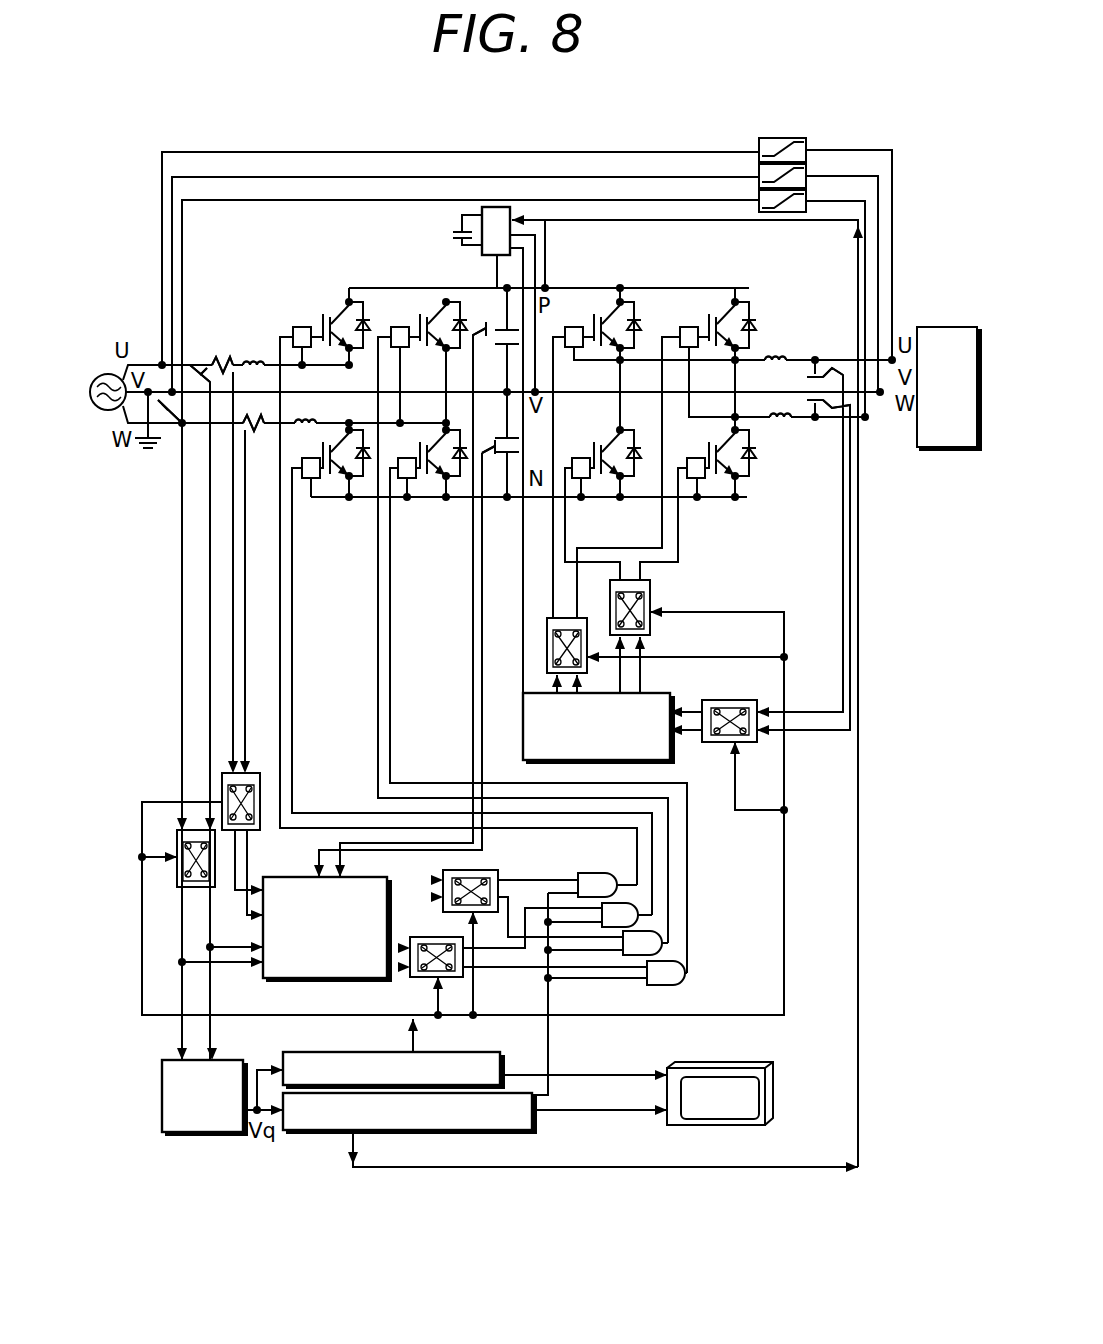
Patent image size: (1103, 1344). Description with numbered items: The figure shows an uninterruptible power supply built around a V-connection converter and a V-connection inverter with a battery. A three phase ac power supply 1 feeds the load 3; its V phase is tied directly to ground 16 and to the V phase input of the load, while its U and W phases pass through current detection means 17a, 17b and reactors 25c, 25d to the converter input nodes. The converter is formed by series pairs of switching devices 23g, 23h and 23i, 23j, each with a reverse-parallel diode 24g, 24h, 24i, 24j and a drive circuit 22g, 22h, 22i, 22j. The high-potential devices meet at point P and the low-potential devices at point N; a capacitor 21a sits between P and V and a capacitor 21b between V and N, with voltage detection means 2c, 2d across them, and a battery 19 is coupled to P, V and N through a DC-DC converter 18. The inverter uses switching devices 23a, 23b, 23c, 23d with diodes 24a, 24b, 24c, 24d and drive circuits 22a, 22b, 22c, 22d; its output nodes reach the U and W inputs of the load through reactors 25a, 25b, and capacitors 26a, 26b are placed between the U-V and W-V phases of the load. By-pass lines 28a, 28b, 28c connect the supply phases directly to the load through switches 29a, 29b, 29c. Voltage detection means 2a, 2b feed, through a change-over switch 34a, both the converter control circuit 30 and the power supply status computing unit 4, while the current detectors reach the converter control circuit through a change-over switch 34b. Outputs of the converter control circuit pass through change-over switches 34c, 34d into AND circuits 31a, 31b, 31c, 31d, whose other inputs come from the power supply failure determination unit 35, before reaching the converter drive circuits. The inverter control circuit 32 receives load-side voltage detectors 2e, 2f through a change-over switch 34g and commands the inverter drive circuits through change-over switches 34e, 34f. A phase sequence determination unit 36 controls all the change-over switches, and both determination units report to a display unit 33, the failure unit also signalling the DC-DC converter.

The three phase ac power supply 1 is at (103, 410).
The voltage detection means 2a is at (196, 369).
The voltage detection means 2b is at (170, 420).
The voltage detection means 2c is at (480, 340).
The voltage detection means 2d is at (490, 456).
The voltage detector 2e is at (828, 366).
The voltage detector 2f is at (846, 425).
The load 3 is at (930, 327).
The power supply status computing unit 4 is at (206, 1134).
The ground 16 is at (148, 450).
The current detection means 17a is at (221, 358).
The current detection means 17b is at (254, 432).
The DC-DC converter 18 is at (488, 207).
The battery 19 is at (460, 230).
The capacitor 21a is at (506, 326).
The capacitor 21b is at (510, 456).
The drive circuit 22a is at (574, 327).
The drive circuit 22b is at (581, 480).
The drive circuit 22c is at (689, 327).
The drive circuit 22d is at (696, 480).
The drive circuit 22g is at (302, 327).
The drive circuit 22h is at (311, 480).
The drive circuit 22i is at (400, 327).
The drive circuit 22j is at (407, 480).
The switching device 23a is at (612, 312).
The switching device 23b is at (606, 478).
The switching device 23c is at (728, 312).
The switching device 23d is at (724, 478).
The switching device 23g is at (338, 312).
The switching device 23h is at (336, 478).
The switching device 23i is at (438, 312).
The switching device 23j is at (434, 478).
The diode 24a is at (634, 318).
The diode 24b is at (634, 480).
The diode 24c is at (750, 318).
The diode 24d is at (749, 470).
The diode 24g is at (363, 318).
The diode 24h is at (364, 480).
The diode 24i is at (460, 318).
The diode 24j is at (460, 480).
The reactor 25a is at (752, 314).
The reactor 25b is at (752, 465).
The reactor 25c is at (256, 360).
The reactor 25d is at (300, 428).
The capacitor 26a is at (780, 356).
The capacitor 26b is at (786, 422).
The by-pass line 28a is at (288, 150).
The by-pass line 28b is at (328, 175).
The by-pass line 28c is at (363, 198).
The switch 29a is at (790, 138).
The switch 29b is at (808, 170).
The switch 29c is at (786, 214).
The converter control circuit 30 is at (352, 980).
The AND circuit 31a is at (582, 873).
The AND circuit 31b is at (622, 903).
The AND circuit 31c is at (632, 955).
The AND circuit 31d is at (662, 985).
The inverter control circuit 32 is at (523, 730).
The display unit 33 is at (773, 1092).
The change-over switch 34a is at (180, 888).
The change-over switch 34b is at (222, 800).
The change-over switch 34c is at (498, 872).
The change-over switch 34d is at (418, 977).
The change-over switch 34e is at (547, 654).
The change-over switch 34f is at (650, 588).
The change-over switch 34g is at (724, 702).
The power supply failure determination unit 35 is at (392, 1130).
The phase sequence determination unit 36 is at (330, 1052).